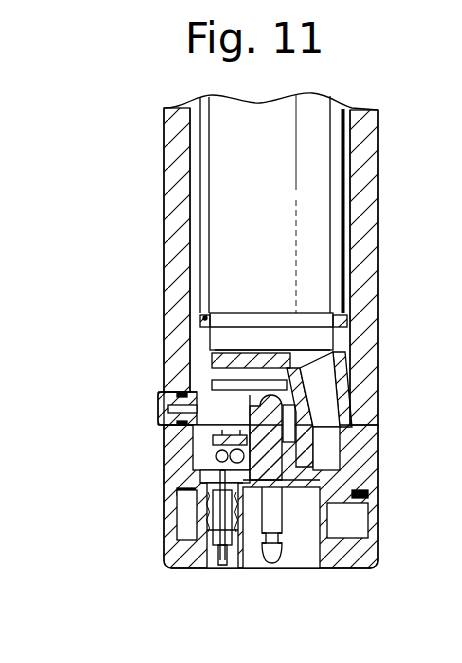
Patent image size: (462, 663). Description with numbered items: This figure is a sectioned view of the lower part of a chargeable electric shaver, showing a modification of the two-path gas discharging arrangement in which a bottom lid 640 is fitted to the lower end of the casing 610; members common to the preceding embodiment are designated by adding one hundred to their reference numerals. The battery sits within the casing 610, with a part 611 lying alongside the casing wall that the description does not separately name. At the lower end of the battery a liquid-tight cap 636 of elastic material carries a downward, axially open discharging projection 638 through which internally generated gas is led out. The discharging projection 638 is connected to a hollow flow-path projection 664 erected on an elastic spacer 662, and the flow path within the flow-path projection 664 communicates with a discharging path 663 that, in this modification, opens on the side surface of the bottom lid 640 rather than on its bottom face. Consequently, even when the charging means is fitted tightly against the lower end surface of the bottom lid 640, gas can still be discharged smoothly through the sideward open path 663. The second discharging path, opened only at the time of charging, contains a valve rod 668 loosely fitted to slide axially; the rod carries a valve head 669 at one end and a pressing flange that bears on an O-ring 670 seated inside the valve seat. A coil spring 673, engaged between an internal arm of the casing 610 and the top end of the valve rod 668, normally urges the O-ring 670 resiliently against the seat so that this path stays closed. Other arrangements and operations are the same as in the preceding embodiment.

The casing 610 is at (372, 182).
The cylinder sleeve 611 is at (330, 248).
The liquid-tight cap 636 is at (333, 362).
The discharging projection 638 is at (340, 402).
The flow-path projection 664 is at (338, 453).
The elastic spacer 662 is at (367, 493).
The discharging path 663 is at (357, 525).
The bottom lid 640 is at (314, 530).
The coil spring 673 is at (210, 493).
The valve rod 668 is at (220, 512).
The O-ring 670 is at (197, 548).
The valve head 669 is at (221, 563).